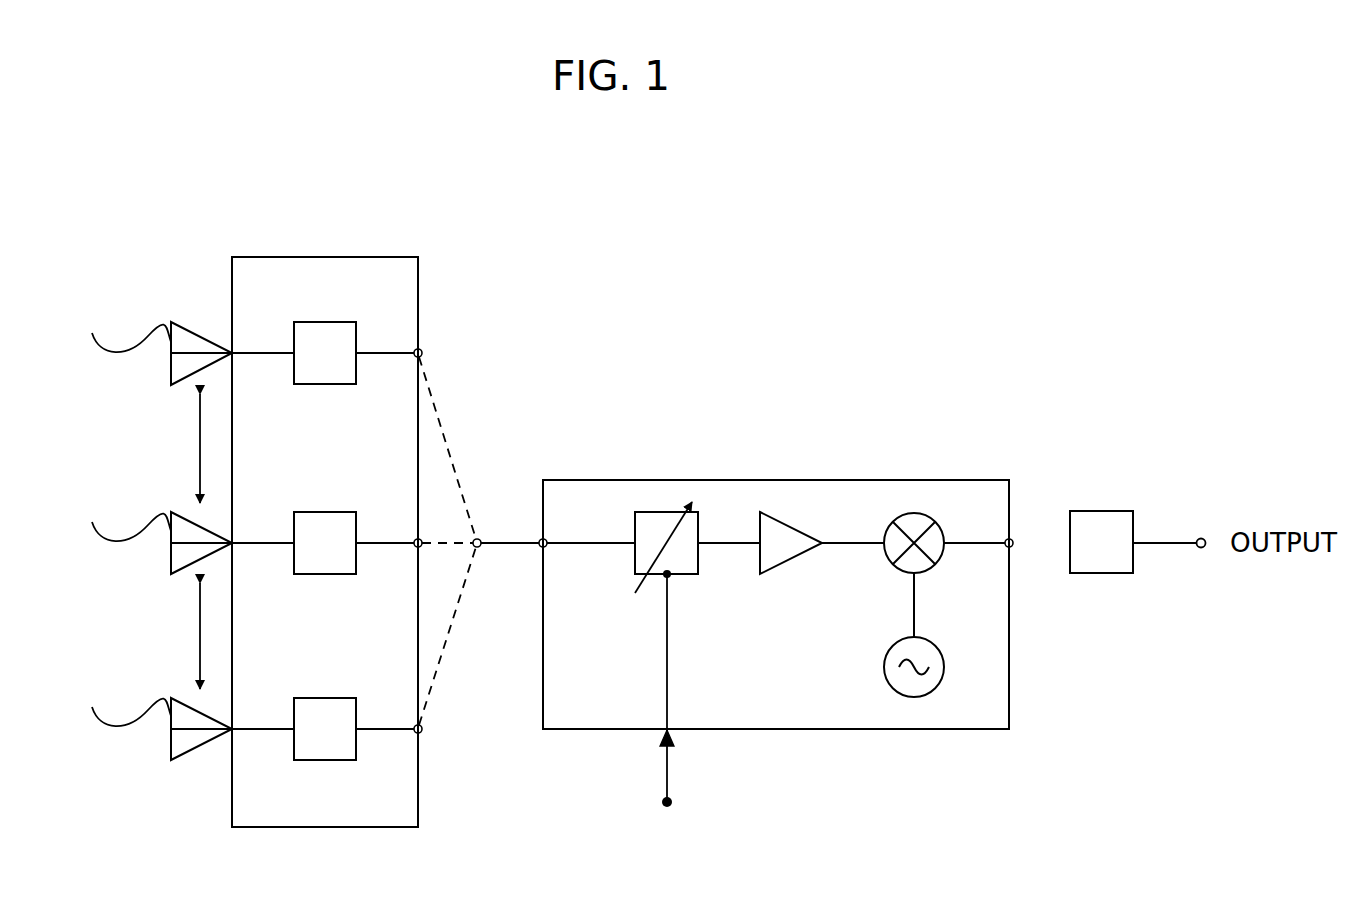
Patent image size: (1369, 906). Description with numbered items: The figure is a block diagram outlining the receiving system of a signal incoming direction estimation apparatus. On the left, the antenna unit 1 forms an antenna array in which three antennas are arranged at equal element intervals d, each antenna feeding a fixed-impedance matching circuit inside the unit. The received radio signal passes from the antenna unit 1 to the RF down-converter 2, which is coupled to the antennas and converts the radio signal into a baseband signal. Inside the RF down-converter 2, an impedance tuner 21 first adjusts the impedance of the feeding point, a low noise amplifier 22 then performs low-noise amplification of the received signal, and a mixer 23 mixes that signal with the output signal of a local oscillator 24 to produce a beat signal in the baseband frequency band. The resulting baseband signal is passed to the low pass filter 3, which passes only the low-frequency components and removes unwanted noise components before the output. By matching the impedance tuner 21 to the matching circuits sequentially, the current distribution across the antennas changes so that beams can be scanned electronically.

The antenna unit 1 is at (312, 257).
The RF down-converter 2 is at (845, 480).
The low pass filter 3 is at (1097, 511).
The impedance tuner 21 is at (653, 512).
The low noise amplifier 22 is at (784, 512).
The mixer 23 is at (916, 512).
The local oscillator 24 is at (944, 667).